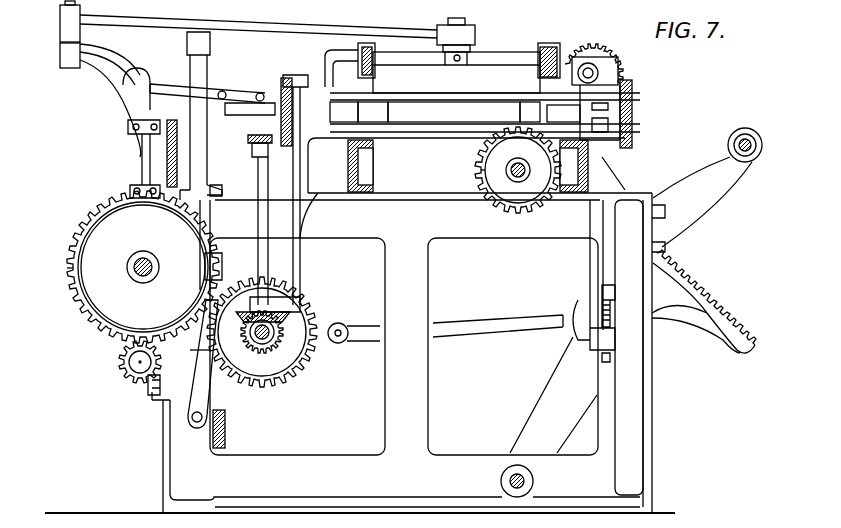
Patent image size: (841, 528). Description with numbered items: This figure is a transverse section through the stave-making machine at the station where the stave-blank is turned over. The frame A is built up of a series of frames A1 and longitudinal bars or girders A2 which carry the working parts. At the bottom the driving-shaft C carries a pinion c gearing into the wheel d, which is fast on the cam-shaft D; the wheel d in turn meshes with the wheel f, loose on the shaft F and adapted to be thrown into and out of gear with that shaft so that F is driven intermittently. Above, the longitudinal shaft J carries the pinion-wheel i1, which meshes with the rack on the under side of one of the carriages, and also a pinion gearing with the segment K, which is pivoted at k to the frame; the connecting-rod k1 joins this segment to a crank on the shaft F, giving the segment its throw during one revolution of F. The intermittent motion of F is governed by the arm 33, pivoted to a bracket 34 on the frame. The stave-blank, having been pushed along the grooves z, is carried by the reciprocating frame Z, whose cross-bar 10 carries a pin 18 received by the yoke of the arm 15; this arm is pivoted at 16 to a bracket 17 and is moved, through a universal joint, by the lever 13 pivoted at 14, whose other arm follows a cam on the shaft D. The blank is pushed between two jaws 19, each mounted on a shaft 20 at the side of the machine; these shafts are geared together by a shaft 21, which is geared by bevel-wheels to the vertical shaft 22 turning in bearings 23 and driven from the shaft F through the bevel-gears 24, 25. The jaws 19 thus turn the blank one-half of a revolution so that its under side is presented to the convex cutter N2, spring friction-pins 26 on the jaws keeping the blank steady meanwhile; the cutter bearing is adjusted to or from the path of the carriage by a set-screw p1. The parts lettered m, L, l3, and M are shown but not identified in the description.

The frame A is at (360, 353).
The frames A1 is at (426, 344).
The longitudinal bars or girders A2 is at (175, 156).
The pivot k is at (526, 482).
The cam-shaft D is at (143, 255).
The gear-wheel d is at (61, 280).
The shaft F is at (262, 347).
The bevel-gear 24 is at (280, 329).
The bevel-gear 25 is at (268, 309).
The wheel f is at (349, 312).
The bearings 23 is at (302, 192).
The vertical shaft 22 is at (257, 220).
The longitudinal shaft J is at (506, 168).
The pinion-wheel i1 is at (475, 163).
The driving-shaft C is at (130, 362).
The pinion c is at (144, 386).
The arm 33 is at (203, 364).
The bracket 34 is at (200, 425).
The connecting-rod k1 is at (498, 315).
The segment K is at (636, 290).
The set-screw p1 is at (611, 315).
The shaft 20 is at (308, 88).
The cutter N2 is at (620, 75).
The cross-bar 10 is at (482, 65).
The grooves z is at (442, 65).
The pin 18 is at (462, 20).
The arm 15 is at (258, 22).
The pivot 16 is at (64, 7).
The bracket 17 is at (110, 108).
The pin m is at (144, 88).
The lever L is at (207, 84).
The link l3 is at (236, 100).
The lever 13 is at (204, 161).
The pivot 14 is at (222, 190).
The arm M is at (140, 154).
The shaft 21 is at (485, 112).
The jaws 19 is at (449, 112).
The spring friction-pins 26 is at (455, 112).